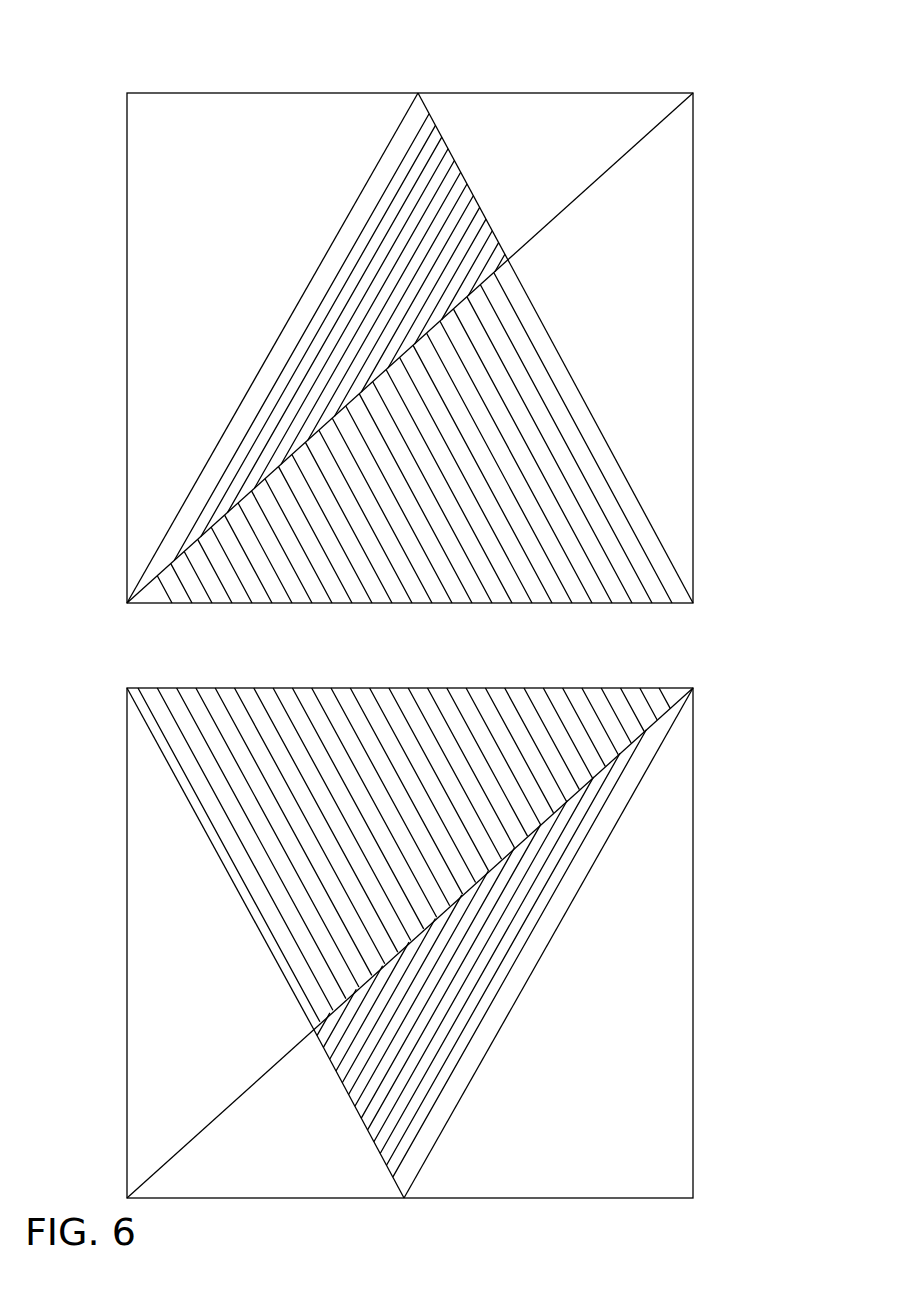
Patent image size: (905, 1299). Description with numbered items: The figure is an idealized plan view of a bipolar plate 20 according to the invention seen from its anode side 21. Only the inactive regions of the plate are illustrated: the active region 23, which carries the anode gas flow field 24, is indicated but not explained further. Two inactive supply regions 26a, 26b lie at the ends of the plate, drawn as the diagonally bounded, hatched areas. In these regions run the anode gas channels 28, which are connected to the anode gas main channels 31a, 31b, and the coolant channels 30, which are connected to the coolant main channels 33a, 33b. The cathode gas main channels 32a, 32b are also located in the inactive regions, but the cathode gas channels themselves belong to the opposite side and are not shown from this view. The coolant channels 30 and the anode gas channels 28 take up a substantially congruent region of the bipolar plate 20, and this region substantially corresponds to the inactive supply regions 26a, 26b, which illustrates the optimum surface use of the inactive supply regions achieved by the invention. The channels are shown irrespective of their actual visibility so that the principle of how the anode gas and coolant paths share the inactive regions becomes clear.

The bipolar plate 20 is at (705, 74).
The anode side 21 is at (672, 192).
The active region 23 is at (690, 632).
The anode gas flow field 24 is at (412, 661).
The inactive supply region 26a is at (640, 459).
The inactive supply region 26b is at (676, 749).
The anode gas channel 28 is at (293, 492).
The coolant channel 30 is at (586, 557).
The anode gas main channel 31a is at (559, 172).
The anode gas main channel 31b is at (302, 1154).
The cathode gas main channel 32a is at (623, 272).
The cathode gas main channel 32b is at (211, 979).
The coolant main channel 33a is at (244, 234).
The coolant main channel 33b is at (612, 1069).